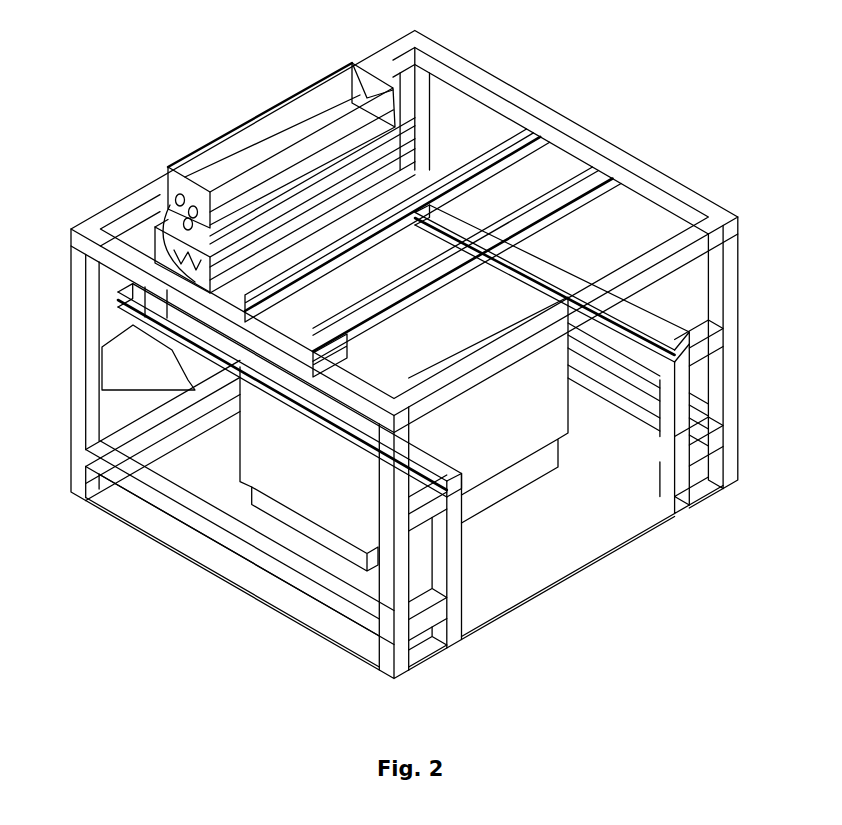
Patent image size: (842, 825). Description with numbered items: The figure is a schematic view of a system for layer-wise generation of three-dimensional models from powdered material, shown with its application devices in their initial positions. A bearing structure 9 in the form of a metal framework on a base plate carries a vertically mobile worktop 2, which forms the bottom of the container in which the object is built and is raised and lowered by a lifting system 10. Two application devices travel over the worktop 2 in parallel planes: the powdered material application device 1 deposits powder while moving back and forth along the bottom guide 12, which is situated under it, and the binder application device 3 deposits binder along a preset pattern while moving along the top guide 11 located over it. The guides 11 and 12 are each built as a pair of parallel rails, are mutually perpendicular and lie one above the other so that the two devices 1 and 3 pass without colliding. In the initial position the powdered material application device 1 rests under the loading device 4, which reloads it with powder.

The powdered material application device 1 is at (165, 238).
The vertically mobile worktop 2 is at (305, 463).
The binder application device 3 is at (203, 348).
The loading device 4 is at (203, 158).
The frame 9 is at (92, 463).
The lifting system 10 is at (355, 551).
The top guide 11 is at (557, 193).
The bottom guide 12 is at (557, 270).